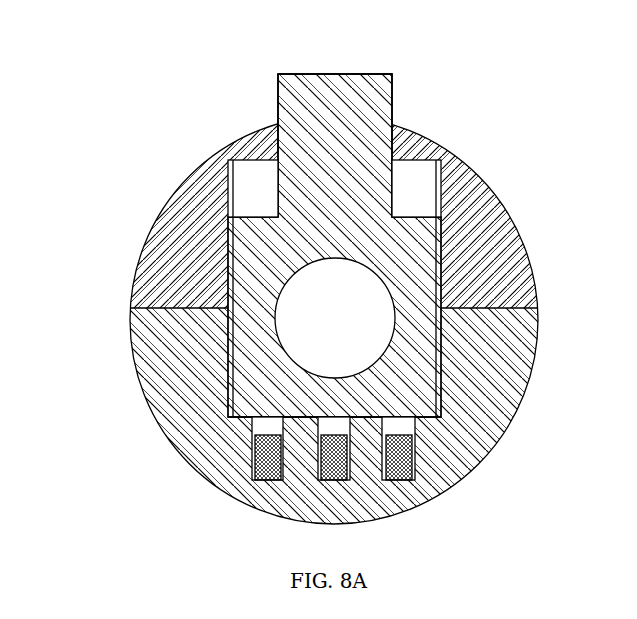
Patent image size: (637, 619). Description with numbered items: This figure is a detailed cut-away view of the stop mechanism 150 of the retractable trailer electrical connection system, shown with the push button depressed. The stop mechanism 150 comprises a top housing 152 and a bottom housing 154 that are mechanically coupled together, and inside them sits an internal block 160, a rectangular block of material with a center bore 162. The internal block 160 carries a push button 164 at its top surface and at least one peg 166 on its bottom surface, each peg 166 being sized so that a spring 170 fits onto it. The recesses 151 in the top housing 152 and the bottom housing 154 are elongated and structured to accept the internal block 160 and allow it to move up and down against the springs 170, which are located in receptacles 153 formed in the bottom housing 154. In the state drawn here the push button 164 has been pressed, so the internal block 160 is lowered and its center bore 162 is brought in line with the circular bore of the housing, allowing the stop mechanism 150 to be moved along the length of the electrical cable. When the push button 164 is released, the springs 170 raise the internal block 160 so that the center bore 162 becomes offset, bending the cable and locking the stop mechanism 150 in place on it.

The stop mechanism 150 is at (329, 283).
The rectangular recess 151 is at (435, 190).
The top housing 152 is at (178, 190).
The receptacle 153 is at (252, 443).
The bottom housing 154 is at (150, 383).
The internal block 160 is at (337, 290).
The center bore 162 is at (273, 323).
The push button 164 is at (397, 95).
The peg 166 is at (407, 428).
The spring 170 is at (398, 458).